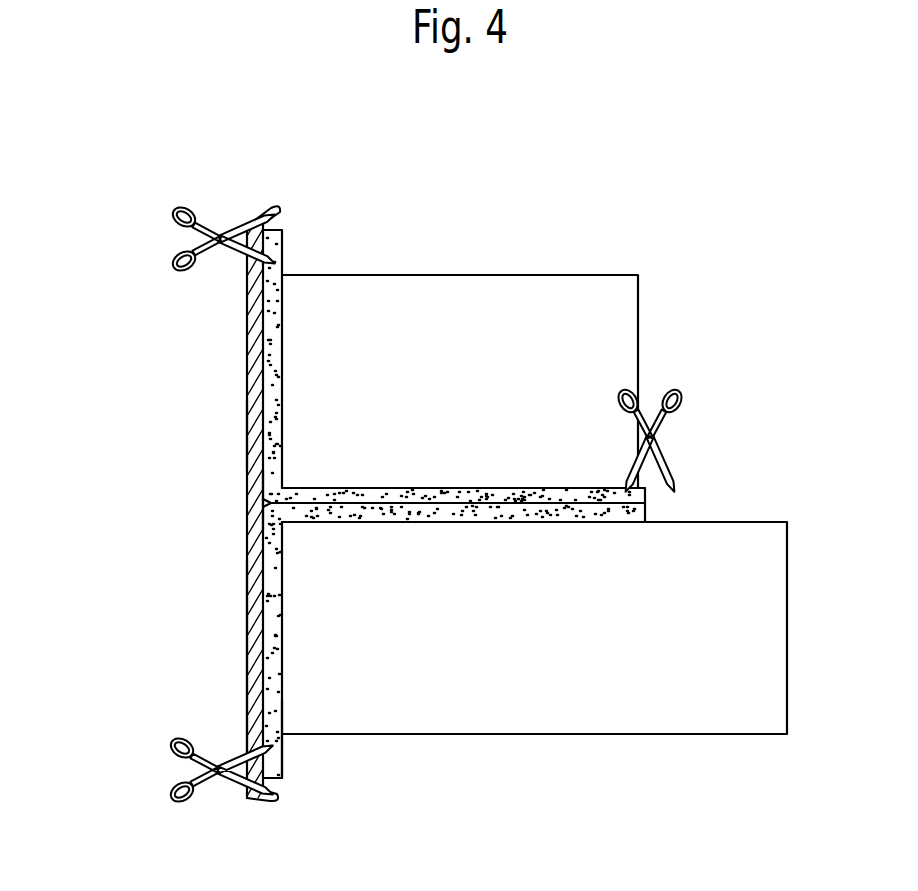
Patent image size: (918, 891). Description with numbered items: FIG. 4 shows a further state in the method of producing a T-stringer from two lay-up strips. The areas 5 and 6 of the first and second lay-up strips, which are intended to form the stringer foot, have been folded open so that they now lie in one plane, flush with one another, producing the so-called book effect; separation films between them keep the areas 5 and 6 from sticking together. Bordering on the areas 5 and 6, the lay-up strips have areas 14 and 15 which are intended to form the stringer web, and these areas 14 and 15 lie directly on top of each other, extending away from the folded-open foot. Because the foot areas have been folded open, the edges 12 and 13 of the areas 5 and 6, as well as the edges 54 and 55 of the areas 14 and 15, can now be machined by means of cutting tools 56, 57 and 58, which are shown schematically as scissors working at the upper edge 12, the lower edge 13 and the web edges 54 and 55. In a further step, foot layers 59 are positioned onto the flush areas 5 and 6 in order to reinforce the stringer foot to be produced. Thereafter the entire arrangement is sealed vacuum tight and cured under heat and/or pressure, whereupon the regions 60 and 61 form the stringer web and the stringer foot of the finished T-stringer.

The area of the first lay-up strip 5 is at (262, 365).
The area of the second lay-up strip 6 is at (268, 627).
The edge of the first lay-up strip 12 is at (276, 227).
The edge of the second lay-up strip 13 is at (277, 785).
The area of the first lay-up strip 14 is at (519, 497).
The area of the second lay-up strip 15 is at (518, 512).
The edge of area 14 54 is at (647, 490).
The edge of area 15 55 is at (647, 517).
The cutting tool 56 is at (178, 218).
The cutting tool 57 is at (178, 753).
The cutting tool 58 is at (671, 390).
The foot layers 59 is at (258, 483).
The region 60 is at (247, 437).
The region 61 is at (400, 525).